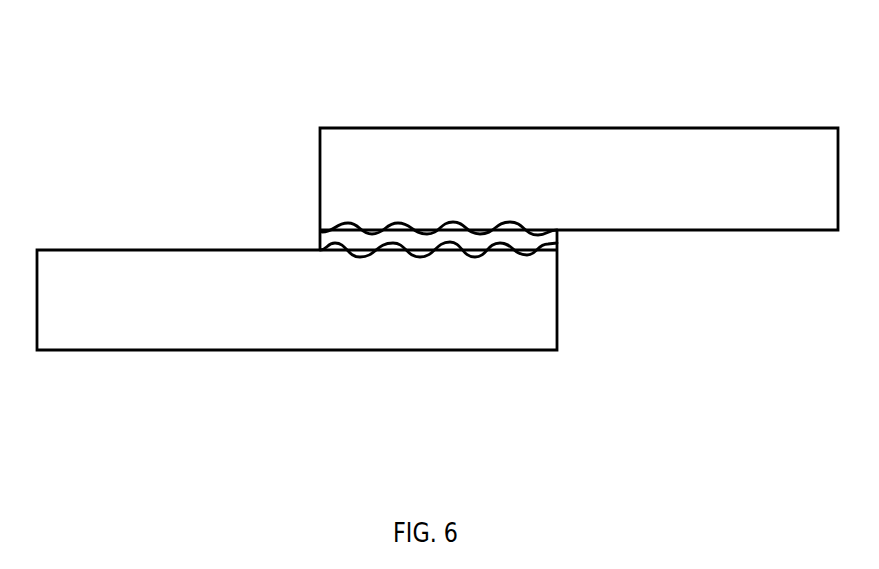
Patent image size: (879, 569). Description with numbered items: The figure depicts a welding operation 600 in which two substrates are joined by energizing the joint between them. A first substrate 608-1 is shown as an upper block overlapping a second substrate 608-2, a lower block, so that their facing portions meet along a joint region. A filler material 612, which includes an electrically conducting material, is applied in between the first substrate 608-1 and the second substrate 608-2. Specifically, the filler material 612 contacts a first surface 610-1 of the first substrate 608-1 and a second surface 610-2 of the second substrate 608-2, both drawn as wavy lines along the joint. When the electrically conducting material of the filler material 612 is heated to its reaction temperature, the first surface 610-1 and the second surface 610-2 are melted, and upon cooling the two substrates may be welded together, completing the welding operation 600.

The welding operation 600 is at (209, 108).
The first substrate 608-1 is at (610, 192).
The second substrate 608-2 is at (297, 290).
The first surface 610-1 is at (453, 222).
The second surface 610-2 is at (484, 252).
The filler material 612 is at (552, 238).